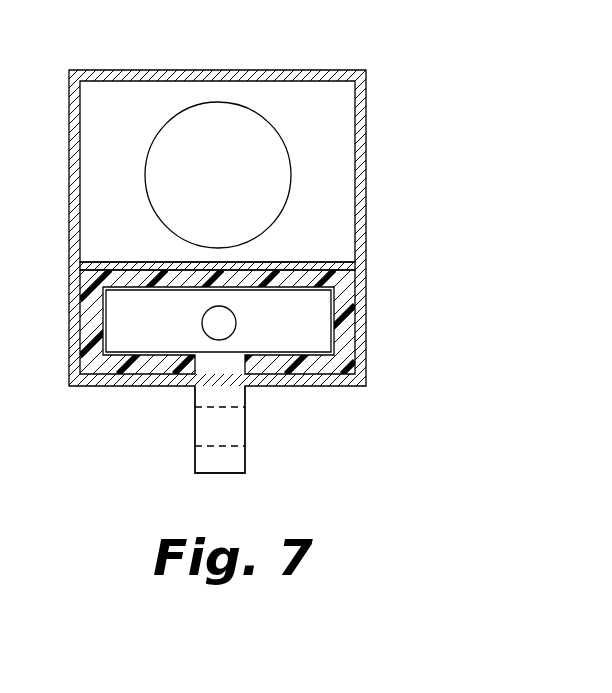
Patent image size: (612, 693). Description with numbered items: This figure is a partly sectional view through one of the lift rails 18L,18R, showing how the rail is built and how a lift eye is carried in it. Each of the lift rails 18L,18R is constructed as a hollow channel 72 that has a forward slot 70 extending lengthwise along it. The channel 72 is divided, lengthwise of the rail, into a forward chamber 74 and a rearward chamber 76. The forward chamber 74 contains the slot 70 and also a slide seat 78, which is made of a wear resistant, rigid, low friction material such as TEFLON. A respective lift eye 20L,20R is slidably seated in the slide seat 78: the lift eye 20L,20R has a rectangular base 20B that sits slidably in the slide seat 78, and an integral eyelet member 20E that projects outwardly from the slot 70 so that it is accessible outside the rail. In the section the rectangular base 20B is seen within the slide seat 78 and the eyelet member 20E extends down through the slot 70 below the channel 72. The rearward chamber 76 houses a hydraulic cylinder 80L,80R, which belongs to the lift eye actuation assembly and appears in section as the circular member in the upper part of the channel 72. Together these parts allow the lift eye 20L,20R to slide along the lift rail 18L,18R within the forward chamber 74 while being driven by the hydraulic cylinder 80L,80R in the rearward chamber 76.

The lift rails 18L,18R is at (366, 207).
The hollow channel 72 is at (357, 110).
The rearward chamber 76 is at (357, 238).
The slide seat 78 is at (341, 299).
The forward chamber 74 is at (356, 354).
The rectangular base 20B is at (340, 314).
The lift eyes 20L,20R is at (193, 398).
The eyelet member 20E is at (245, 427).
The forward slot 70 is at (242, 390).
The hydraulic cylinder 80L,80R is at (230, 102).